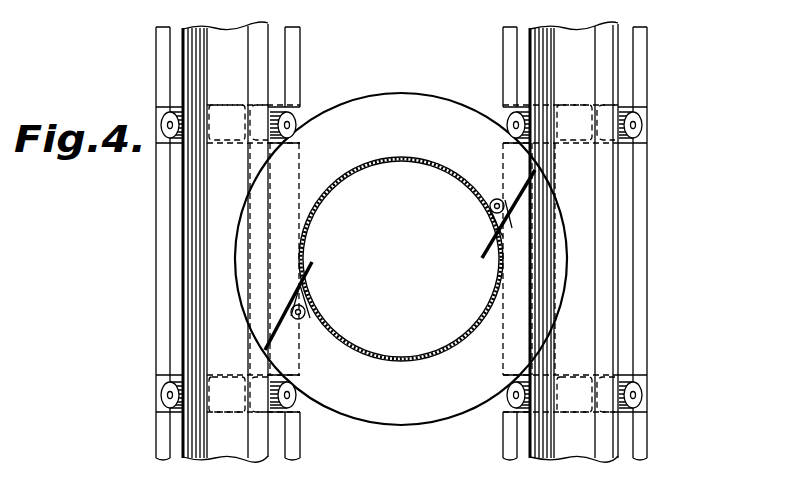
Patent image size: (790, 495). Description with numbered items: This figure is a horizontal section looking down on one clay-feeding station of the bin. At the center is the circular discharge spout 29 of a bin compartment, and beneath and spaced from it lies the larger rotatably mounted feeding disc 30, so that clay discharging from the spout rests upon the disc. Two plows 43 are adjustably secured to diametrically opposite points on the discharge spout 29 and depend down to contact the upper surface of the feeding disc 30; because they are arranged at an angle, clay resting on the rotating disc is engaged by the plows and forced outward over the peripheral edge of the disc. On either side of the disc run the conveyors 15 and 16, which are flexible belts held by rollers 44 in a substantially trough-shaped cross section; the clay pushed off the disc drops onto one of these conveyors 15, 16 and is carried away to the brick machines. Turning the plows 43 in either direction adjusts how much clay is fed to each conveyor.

The conveyor 15 is at (218, 320).
The conveyor 16 is at (602, 210).
The circular discharge spout 29 is at (427, 163).
The feeding disc 30 is at (402, 410).
The plow 43 is at (523, 181).
The roller 44 is at (164, 118).